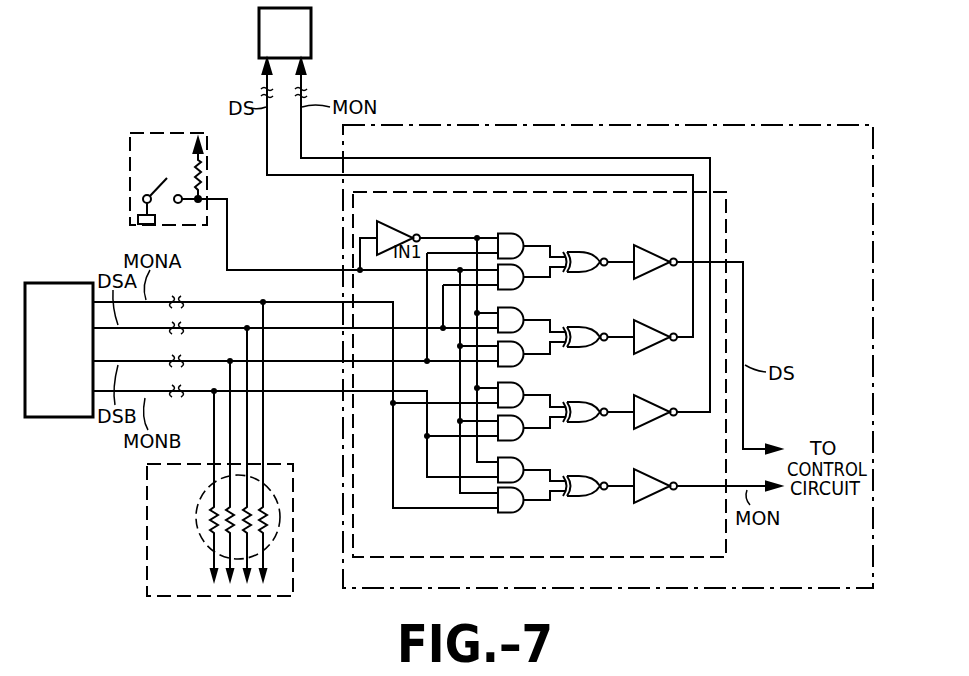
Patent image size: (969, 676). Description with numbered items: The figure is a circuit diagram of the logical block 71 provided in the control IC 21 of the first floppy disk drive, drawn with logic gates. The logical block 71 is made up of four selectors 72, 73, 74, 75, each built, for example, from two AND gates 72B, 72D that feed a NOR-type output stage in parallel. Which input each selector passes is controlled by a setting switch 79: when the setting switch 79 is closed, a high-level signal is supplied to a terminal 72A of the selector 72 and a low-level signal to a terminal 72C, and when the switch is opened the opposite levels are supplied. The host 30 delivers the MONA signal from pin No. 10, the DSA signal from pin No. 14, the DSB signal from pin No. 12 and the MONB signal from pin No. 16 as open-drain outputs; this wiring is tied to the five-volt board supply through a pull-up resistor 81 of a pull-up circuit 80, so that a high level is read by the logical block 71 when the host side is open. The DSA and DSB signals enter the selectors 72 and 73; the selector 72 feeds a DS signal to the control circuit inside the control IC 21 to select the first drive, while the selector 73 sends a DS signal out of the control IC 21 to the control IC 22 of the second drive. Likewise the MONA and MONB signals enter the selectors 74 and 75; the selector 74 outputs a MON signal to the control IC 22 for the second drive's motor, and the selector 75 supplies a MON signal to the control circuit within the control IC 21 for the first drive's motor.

The control IC 21 is at (780, 160).
The control IC 22 is at (311, 33).
The host 30 is at (38, 302).
The pin No. 10 is at (281, 399).
The pin No. 14 is at (281, 329).
The pin No. 12 is at (281, 362).
The pin No. 16 is at (281, 428).
The logical block 71 is at (720, 214).
The selector 72 is at (598, 278).
The terminal 72A is at (509, 234).
The AND gate 72B is at (515, 248).
The terminal 72C is at (534, 282).
The AND gate 72D is at (514, 290).
The selector 73 is at (580, 356).
The selector 74 is at (581, 430).
The selector 75 is at (581, 506).
The setting switch 79 is at (199, 133).
The pull-up circuit 80 is at (276, 470).
The pull-up resistor 81 is at (277, 541).